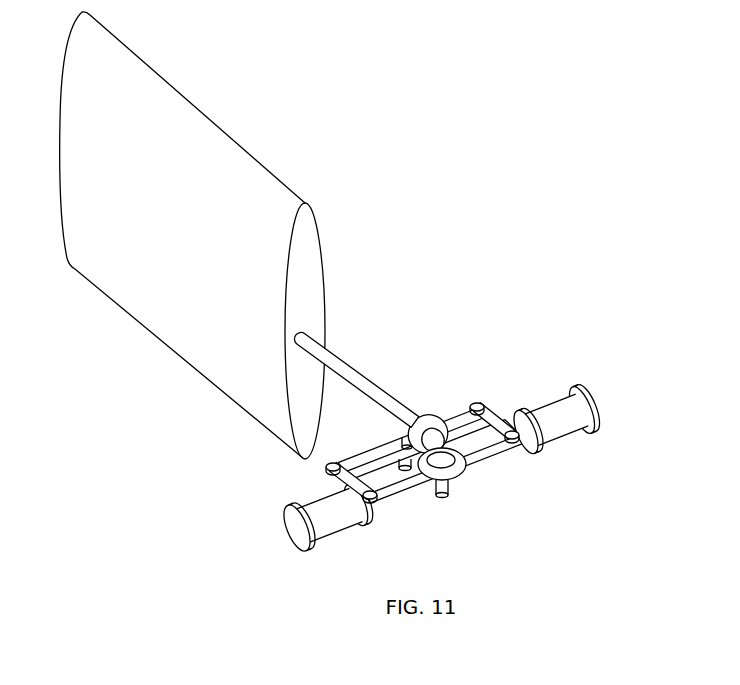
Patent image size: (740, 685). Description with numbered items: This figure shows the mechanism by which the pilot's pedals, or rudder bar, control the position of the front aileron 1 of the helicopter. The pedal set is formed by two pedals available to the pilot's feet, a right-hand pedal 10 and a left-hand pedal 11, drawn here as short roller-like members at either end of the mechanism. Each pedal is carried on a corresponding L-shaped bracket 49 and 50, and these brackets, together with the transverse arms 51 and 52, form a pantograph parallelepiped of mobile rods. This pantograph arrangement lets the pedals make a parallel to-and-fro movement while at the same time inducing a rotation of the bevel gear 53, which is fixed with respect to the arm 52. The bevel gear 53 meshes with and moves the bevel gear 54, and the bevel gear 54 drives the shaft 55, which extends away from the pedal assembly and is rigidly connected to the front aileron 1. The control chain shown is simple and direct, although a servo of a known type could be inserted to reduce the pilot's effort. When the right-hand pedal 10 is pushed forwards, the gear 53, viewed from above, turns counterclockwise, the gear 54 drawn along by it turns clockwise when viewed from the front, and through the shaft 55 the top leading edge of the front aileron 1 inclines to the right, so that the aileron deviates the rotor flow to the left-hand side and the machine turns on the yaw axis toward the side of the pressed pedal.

The front aileron 1 is at (211, 119).
The right-hand pedal 10 is at (578, 432).
The left-hand pedal 11 is at (332, 536).
The L-shaped bracket 49 is at (335, 481).
The L-shaped bracket 50 is at (492, 407).
The transverse arm 51 is at (455, 417).
The transverse arm 52 is at (483, 462).
The bevel gear 53 is at (452, 474).
The bevel gear 54 is at (428, 418).
The shaft 55 is at (345, 352).